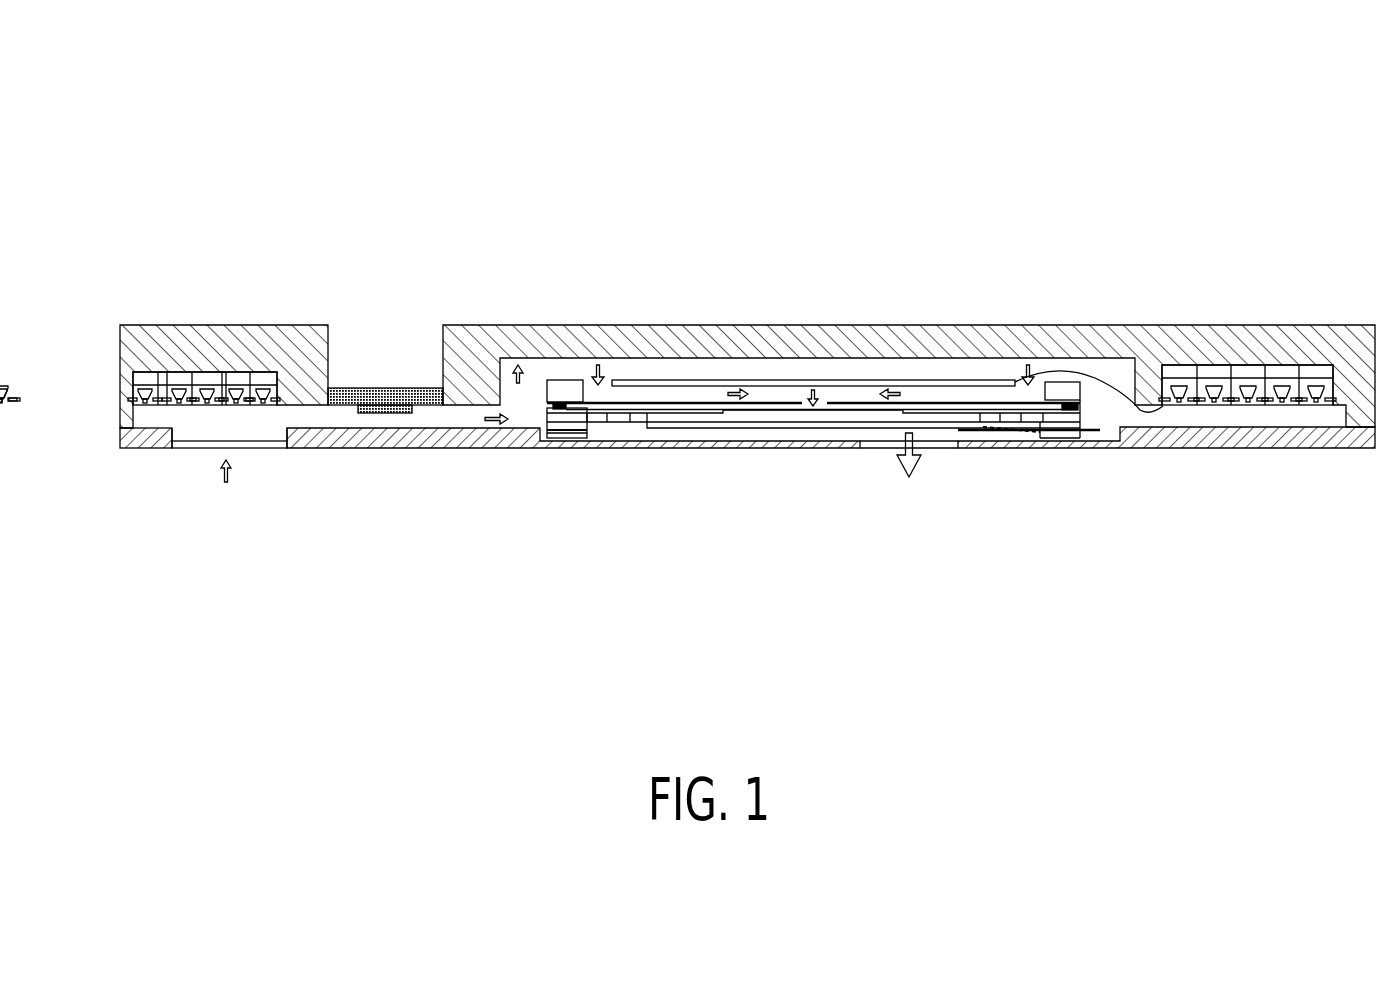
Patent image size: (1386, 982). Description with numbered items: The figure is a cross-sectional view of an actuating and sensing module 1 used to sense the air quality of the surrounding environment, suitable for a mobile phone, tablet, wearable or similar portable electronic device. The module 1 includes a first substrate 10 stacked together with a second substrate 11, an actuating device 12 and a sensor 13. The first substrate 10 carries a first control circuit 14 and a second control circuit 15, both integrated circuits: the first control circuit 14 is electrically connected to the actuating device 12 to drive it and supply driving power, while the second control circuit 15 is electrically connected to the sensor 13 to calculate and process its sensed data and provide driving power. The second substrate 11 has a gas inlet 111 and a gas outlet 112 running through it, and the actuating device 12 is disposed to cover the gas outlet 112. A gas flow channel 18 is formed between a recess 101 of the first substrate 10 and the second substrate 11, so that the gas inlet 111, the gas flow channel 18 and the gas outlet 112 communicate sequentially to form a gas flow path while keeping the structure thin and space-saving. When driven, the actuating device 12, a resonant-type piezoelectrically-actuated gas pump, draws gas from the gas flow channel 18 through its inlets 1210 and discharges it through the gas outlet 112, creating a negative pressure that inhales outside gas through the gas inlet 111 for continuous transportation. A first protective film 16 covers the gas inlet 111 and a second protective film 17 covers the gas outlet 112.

The actuating and sensing module 1 is at (1295, 83).
The first substrate 10 is at (183, 352).
The recess 101 is at (878, 357).
The second substrate 11 is at (135, 468).
The gas inlet 111 is at (173, 447).
The gas outlet 112 is at (937, 452).
The actuating device 12 is at (768, 431).
The inlets 1210 is at (588, 383).
The sensor 13 is at (385, 405).
The first control circuit 14 is at (1237, 378).
The second control circuit 15 is at (205, 378).
The first protective film 16 is at (258, 447).
The second protective film 17 is at (877, 432).
The gas flow channel 18 is at (610, 382).